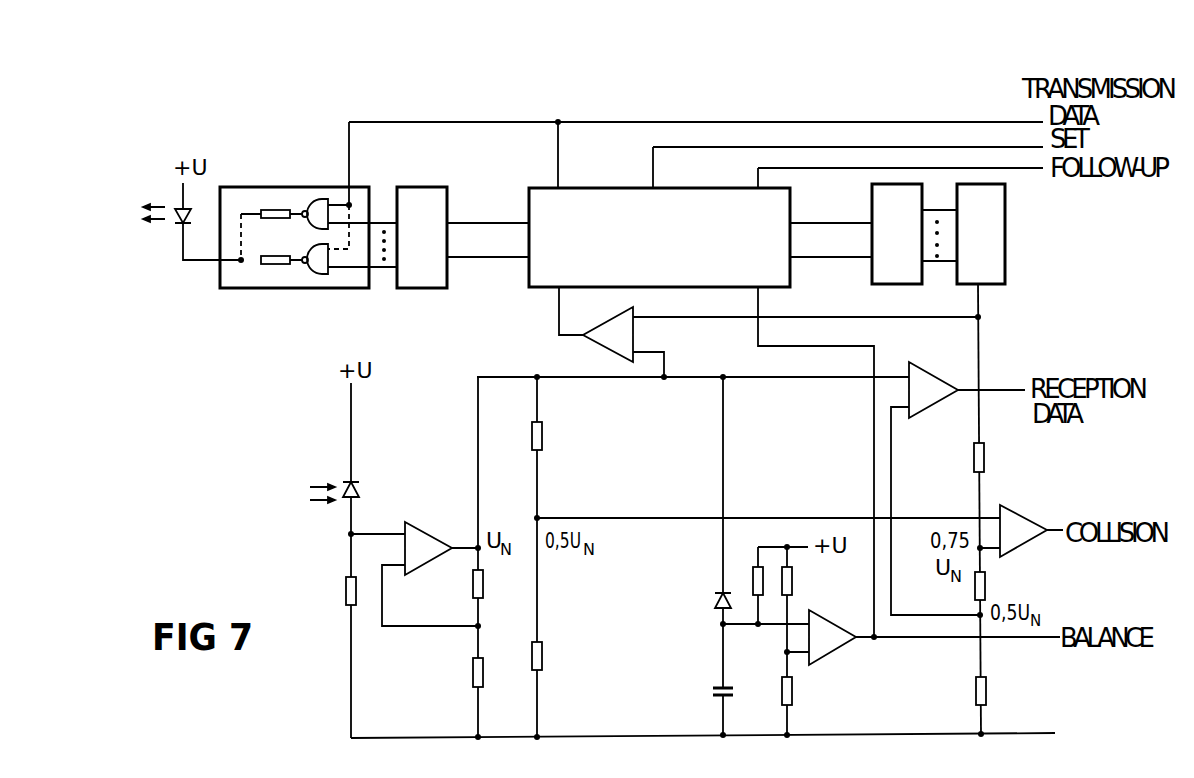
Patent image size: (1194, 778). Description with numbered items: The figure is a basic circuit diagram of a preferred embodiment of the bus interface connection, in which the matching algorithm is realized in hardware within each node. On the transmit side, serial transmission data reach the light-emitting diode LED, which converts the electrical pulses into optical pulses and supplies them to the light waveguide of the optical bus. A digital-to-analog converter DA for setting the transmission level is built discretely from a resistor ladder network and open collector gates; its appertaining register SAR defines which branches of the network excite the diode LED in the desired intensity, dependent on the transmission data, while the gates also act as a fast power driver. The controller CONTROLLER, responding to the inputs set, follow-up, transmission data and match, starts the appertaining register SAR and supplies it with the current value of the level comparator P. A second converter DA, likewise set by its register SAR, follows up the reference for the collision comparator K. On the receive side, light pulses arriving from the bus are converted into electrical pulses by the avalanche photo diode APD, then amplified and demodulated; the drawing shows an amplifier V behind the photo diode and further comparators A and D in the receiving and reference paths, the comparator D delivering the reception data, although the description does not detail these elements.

The light-emitting diode LED is at (165, 233).
The avalanche photo diode APD is at (355, 492).
The digital-to-analog converter DA is at (612, 236).
The successive approximation register SAR is at (659, 236).
The controller CONTROLLER is at (659, 237).
The level comparator P is at (608, 334).
The amplifier V is at (428, 548).
The comparator A is at (832, 637).
The comparator D is at (933, 390).
The collision comparator K is at (1023, 531).